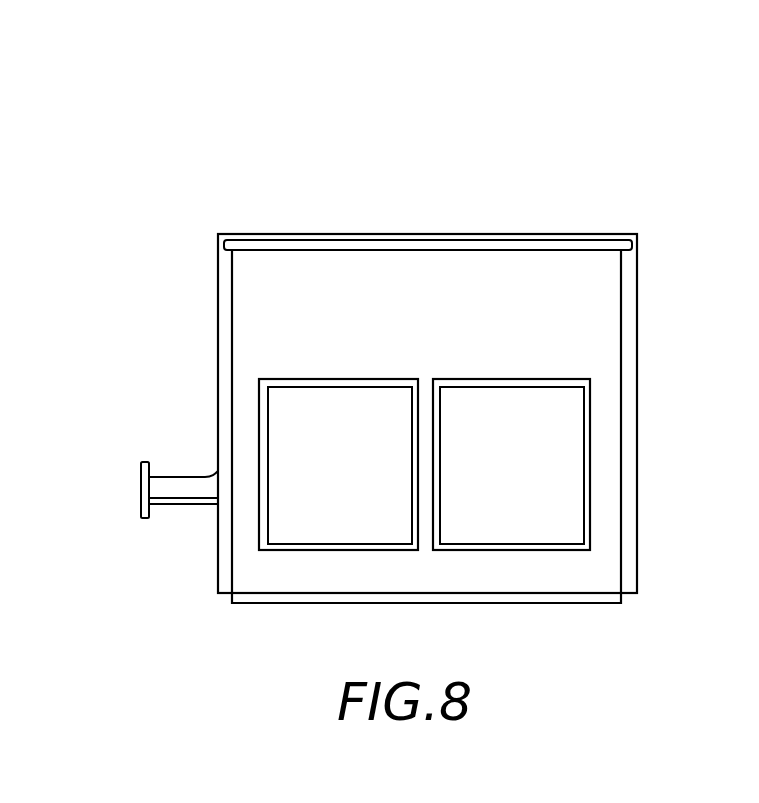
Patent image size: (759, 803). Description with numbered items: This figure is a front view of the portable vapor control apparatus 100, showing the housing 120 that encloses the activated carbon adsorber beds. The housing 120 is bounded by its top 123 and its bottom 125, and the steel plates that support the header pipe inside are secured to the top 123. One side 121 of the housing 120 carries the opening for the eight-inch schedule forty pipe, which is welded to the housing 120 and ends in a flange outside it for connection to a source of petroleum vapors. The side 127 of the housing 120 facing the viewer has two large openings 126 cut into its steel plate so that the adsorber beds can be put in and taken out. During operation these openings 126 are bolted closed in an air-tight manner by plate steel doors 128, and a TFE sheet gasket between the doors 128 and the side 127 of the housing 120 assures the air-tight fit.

The apparatus 100 is at (246, 187).
The housing 120 is at (208, 433).
The side of the housing 121 is at (218, 353).
The top of the housing 123 is at (418, 234).
The bottom of the housing 125 is at (460, 604).
The openings 126 is at (590, 423).
The side of the housing 127 is at (597, 320).
The plate steel doors 128 is at (290, 512).